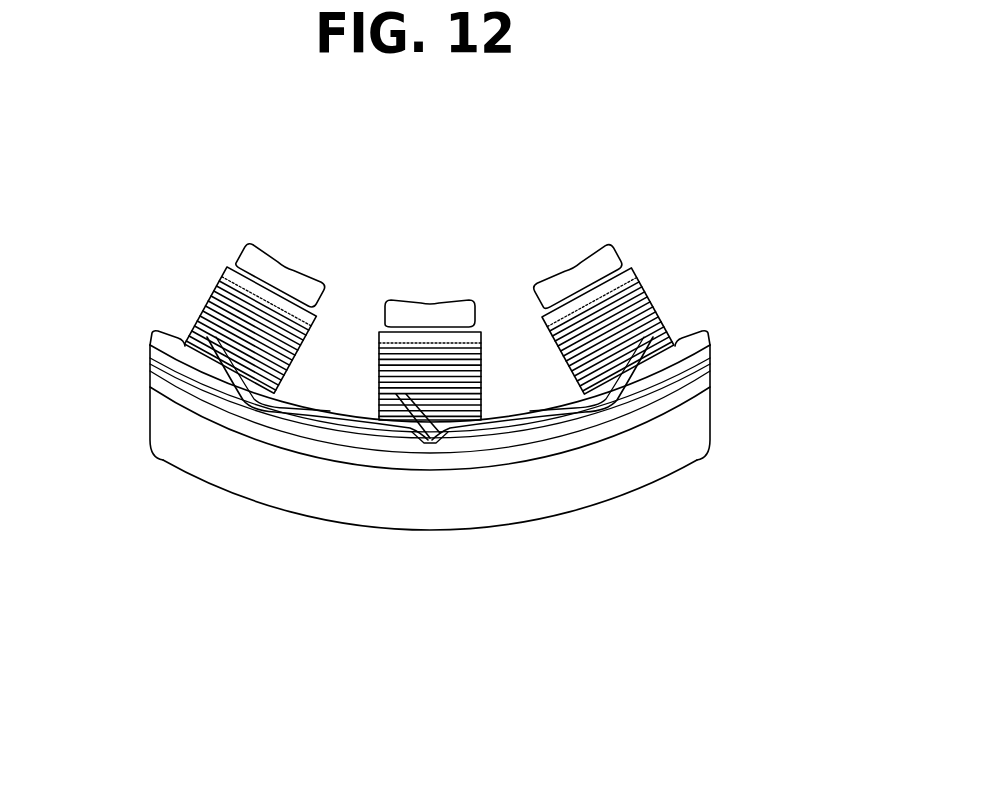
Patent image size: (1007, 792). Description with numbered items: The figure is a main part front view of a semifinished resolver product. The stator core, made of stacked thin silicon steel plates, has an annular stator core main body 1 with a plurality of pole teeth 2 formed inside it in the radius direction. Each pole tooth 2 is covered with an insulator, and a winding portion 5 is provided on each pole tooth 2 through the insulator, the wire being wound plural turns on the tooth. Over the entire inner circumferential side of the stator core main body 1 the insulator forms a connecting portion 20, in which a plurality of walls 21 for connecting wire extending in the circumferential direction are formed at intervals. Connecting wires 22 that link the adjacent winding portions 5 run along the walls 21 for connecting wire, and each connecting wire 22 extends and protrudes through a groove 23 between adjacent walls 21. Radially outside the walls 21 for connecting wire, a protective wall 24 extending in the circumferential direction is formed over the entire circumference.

The stator core main body 1 is at (653, 447).
The pole teeth 2 is at (278, 275).
The winding portion 5 is at (396, 360).
The connecting portion 20 is at (163, 387).
The wall for connecting wire 21 is at (167, 335).
The connecting wire 22 is at (333, 443).
The groove 23 is at (429, 440).
The protective wall 24 is at (207, 413).